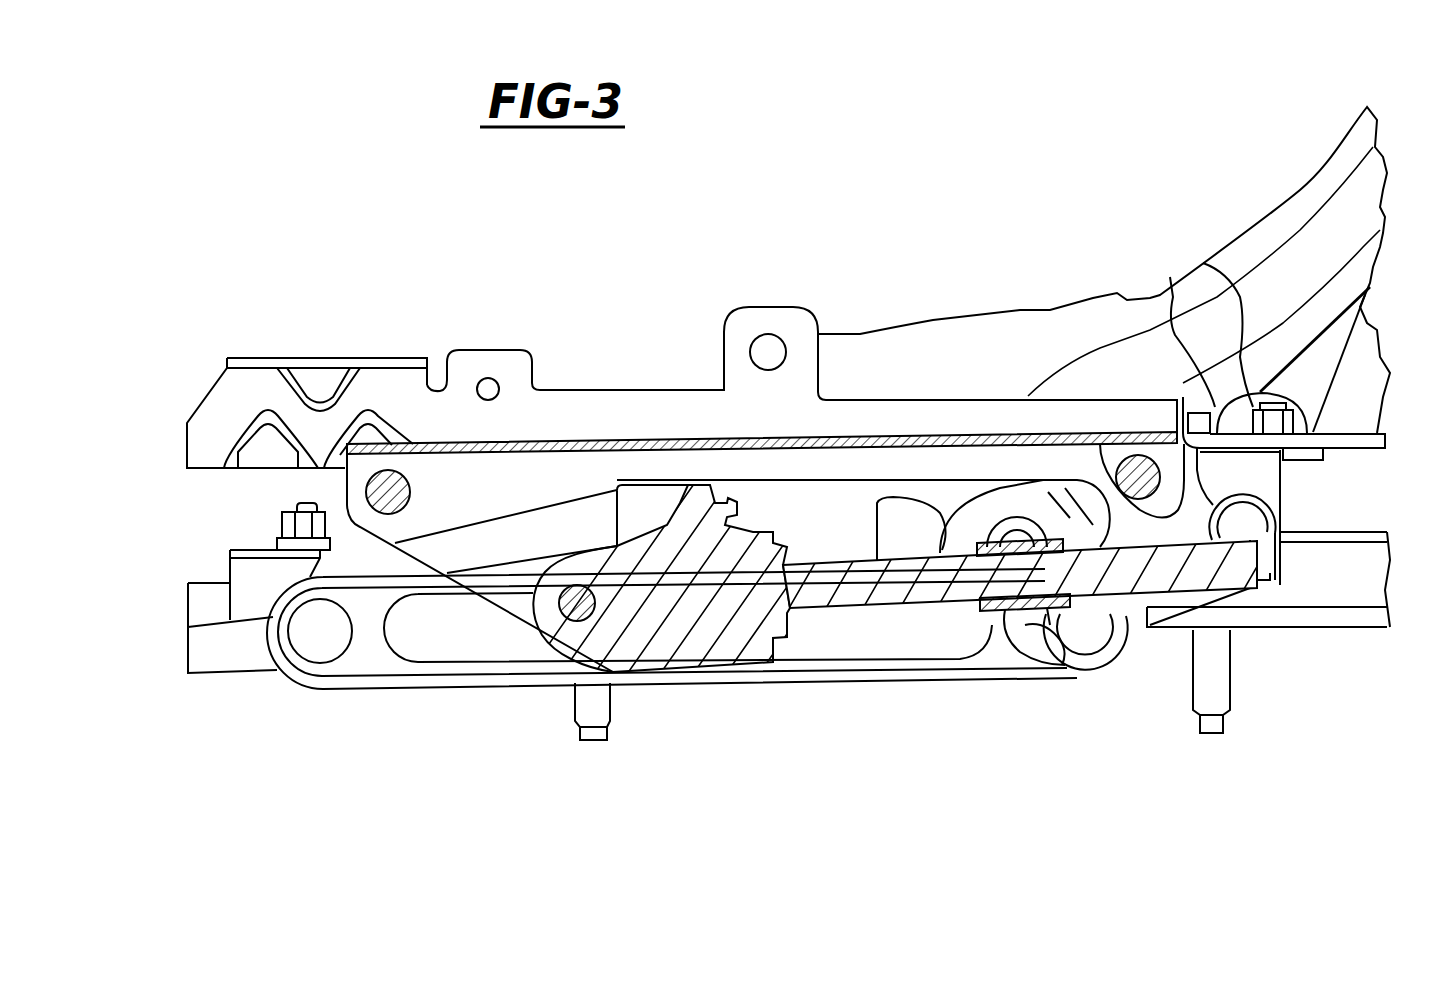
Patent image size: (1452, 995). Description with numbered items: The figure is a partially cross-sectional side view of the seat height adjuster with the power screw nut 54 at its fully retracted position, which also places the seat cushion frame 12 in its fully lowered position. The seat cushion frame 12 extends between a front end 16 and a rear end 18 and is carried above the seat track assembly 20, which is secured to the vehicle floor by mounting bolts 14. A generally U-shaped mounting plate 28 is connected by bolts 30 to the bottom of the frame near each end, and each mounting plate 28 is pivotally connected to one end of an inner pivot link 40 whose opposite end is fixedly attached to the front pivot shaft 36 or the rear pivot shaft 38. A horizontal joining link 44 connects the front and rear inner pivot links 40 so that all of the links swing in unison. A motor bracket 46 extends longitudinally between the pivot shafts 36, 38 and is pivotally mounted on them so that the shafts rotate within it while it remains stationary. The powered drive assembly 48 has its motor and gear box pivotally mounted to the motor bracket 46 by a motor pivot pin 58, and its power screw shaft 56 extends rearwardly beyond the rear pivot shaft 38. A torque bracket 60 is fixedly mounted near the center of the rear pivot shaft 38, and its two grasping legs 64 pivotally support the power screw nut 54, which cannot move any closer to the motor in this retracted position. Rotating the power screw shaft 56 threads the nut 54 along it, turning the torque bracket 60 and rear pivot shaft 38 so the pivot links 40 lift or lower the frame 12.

The seat cushion frame 12 is at (1033, 303).
The mounting bolts 14 is at (615, 715).
The front end 16 is at (188, 430).
The rear end 18 is at (1377, 450).
The seat track assembly 20 is at (1347, 578).
The U-shaped mounting plate 28 is at (1273, 477).
The bolts 30 is at (1203, 263).
The front pivot shaft 36 is at (405, 485).
The rear pivot shaft 38 is at (1127, 460).
The inner pivot link 40 is at (348, 527).
The horizontal joining link 44 is at (437, 653).
The motor bracket 46 is at (547, 488).
The powered drive assembly 48 is at (760, 670).
The power screw nut 54 is at (1003, 617).
The power screw shaft 56 is at (912, 598).
The motor pivot pin 58 is at (552, 626).
The torque bracket 60 is at (966, 498).
The grasping legs 64 is at (1058, 643).